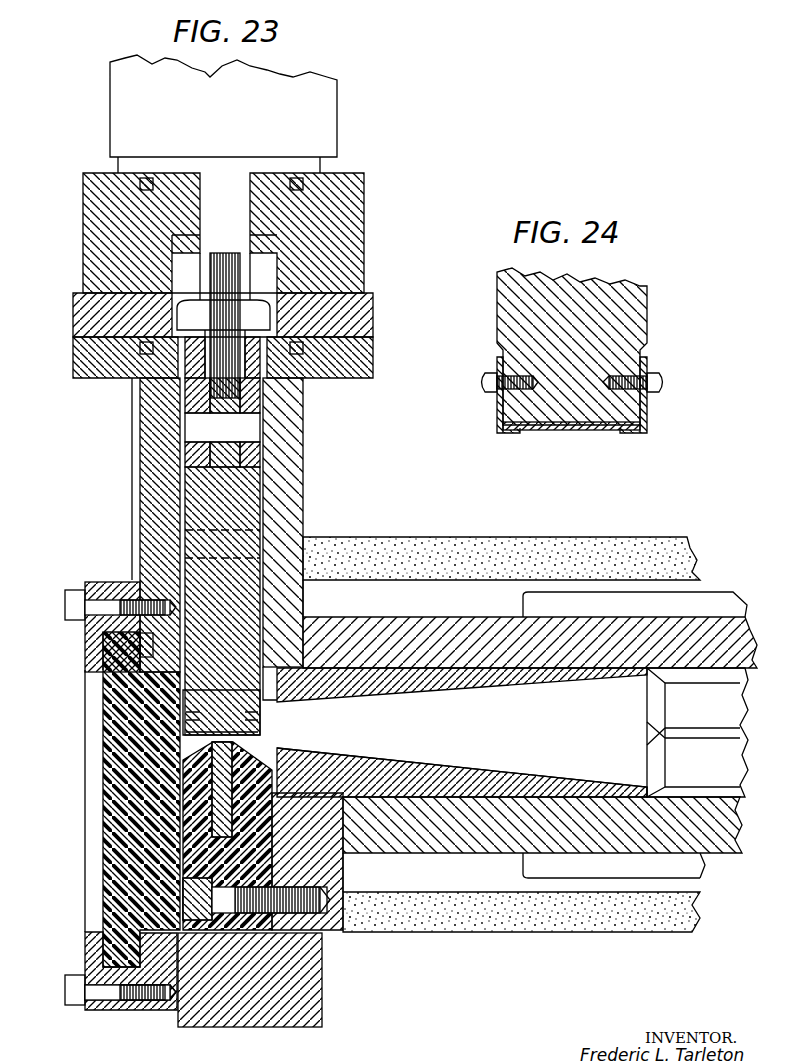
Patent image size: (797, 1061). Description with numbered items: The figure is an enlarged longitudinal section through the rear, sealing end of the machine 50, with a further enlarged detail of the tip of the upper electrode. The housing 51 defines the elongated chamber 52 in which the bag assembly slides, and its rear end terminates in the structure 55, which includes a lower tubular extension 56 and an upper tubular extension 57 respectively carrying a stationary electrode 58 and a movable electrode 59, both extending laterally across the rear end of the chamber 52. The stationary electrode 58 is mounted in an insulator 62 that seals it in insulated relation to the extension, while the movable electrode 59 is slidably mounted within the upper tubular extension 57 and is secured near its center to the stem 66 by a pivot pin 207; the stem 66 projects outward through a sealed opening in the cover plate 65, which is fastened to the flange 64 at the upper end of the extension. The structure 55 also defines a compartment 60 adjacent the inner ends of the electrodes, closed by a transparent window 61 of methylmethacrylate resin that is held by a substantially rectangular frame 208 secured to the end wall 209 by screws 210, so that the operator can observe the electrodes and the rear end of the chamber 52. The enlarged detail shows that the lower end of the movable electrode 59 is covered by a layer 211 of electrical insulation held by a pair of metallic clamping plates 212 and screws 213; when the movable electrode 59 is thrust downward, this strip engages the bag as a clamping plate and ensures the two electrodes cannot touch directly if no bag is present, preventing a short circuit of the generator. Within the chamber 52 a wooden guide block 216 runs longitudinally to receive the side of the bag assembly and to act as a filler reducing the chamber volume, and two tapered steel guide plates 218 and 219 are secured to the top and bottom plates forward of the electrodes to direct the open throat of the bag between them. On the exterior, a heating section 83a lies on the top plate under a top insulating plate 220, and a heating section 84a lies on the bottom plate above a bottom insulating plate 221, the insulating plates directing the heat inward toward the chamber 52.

In FIG. 23, the machine 50 is at (428, 527).
In FIG. 23, the housing 51 is at (375, 598).
In FIG. 23, the chamber 52 is at (616, 740).
In FIG. 23, the structure 55 is at (130, 538).
In FIG. 23, the lower tubular extension 56 is at (312, 958).
In FIG. 23, the upper tubular extension 57 is at (290, 463).
In FIG. 23, the stationary electrode 58 is at (232, 745).
In FIG. 23, the movable electrode 59 is at (263, 700).
In FIG. 24, the movable electrode 59 is at (640, 327).
In FIG. 23, the compartment 60 is at (188, 745).
In FIG. 23, the transparent window 61 is at (103, 830).
In FIG. 23, the insulator 62 is at (262, 760).
In FIG. 23, the flange 64 is at (365, 364).
In FIG. 23, the cover plate 65 is at (364, 316).
In FIG. 23, the stem 66 is at (232, 226).
In FIG. 23, the heating unit section 83a is at (605, 598).
In FIG. 23, the heating unit section 84a is at (593, 872).
In FIG. 23, the pivot pin 207 is at (253, 428).
In FIG. 23, the frame 208 is at (102, 1008).
In FIG. 23, the end wall 209 is at (145, 458).
In FIG. 23, the screws 210 is at (65, 605).
In FIG. 24, the layer of electrical insulation 211 is at (570, 428).
In FIG. 24, the clamping plates 212 is at (497, 417).
In FIG. 24, the screws 213 is at (484, 385).
In FIG. 23, the guide block 216 is at (653, 707).
In FIG. 23, the guide plate 218 is at (444, 696).
In FIG. 23, the guide plate 219 is at (480, 762).
In FIG. 23, the top insulating plate 220 is at (533, 545).
In FIG. 23, the bottom insulating plate 221 is at (452, 926).